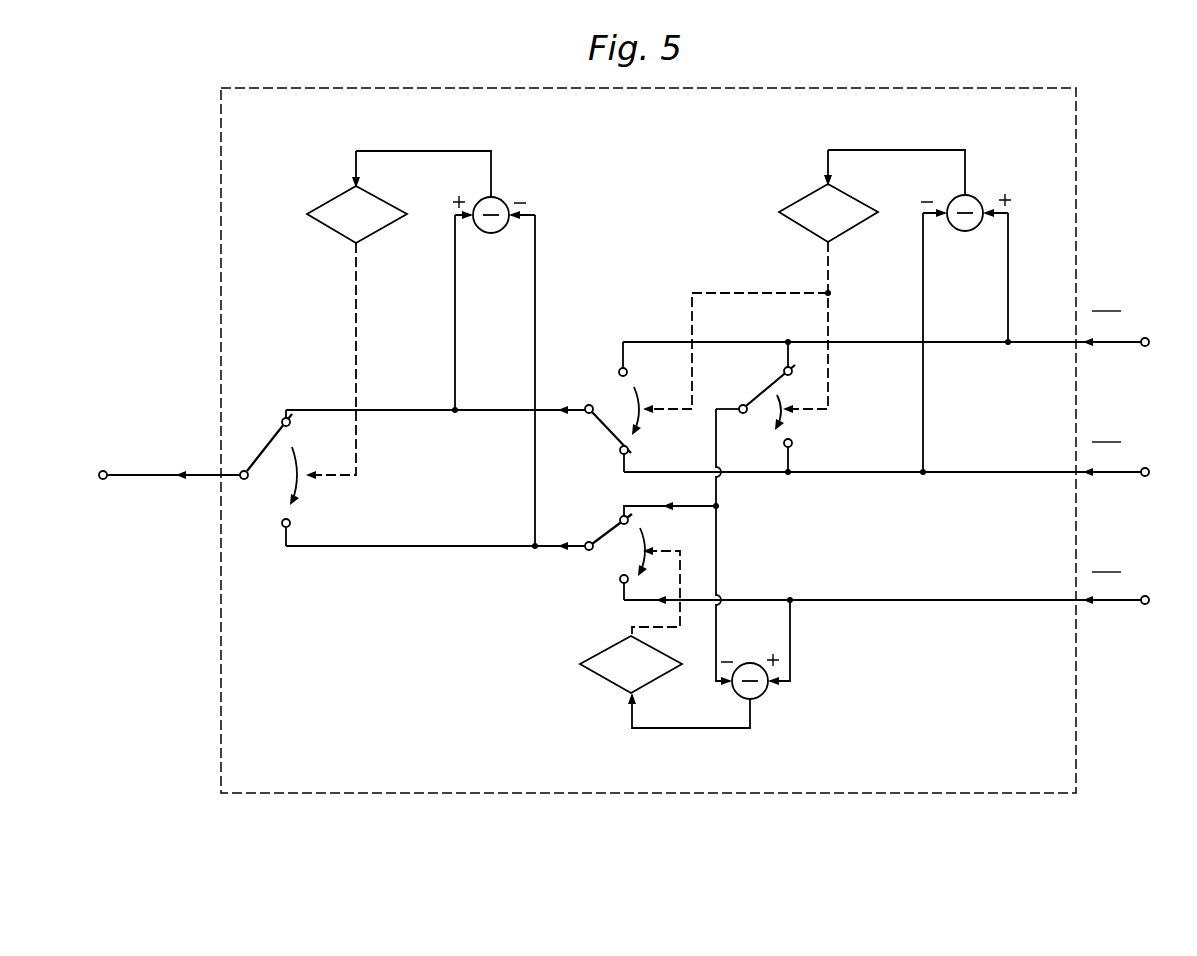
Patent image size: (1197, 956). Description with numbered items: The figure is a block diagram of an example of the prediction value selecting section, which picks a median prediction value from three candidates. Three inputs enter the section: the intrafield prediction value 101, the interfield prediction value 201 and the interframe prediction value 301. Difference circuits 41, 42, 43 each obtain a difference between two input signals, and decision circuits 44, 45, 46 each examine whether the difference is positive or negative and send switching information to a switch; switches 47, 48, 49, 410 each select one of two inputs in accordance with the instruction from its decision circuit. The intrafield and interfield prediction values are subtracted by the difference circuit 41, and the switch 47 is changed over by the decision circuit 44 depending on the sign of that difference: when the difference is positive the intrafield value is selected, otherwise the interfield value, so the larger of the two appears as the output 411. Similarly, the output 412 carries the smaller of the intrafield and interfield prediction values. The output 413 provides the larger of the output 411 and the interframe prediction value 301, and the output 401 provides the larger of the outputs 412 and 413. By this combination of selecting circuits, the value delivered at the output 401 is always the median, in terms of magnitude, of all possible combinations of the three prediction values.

The difference circuit 41 is at (974, 199).
The difference circuit 42 is at (760, 693).
The difference circuit 43 is at (499, 199).
The decision circuit 44 is at (855, 200).
The decision circuit 45 is at (588, 658).
The decision circuit 46 is at (340, 204).
The switch 47 is at (768, 397).
The switch 48 is at (607, 404).
The switch 49 is at (604, 536).
The switch 410 is at (262, 456).
The output 411 is at (718, 537).
The output 412 is at (405, 409).
The output 413 is at (385, 548).
The intrafield prediction value 101 is at (904, 332).
The interfield prediction value 201 is at (905, 462).
The interframe prediction value 301 is at (905, 591).
The output 401 is at (163, 464).